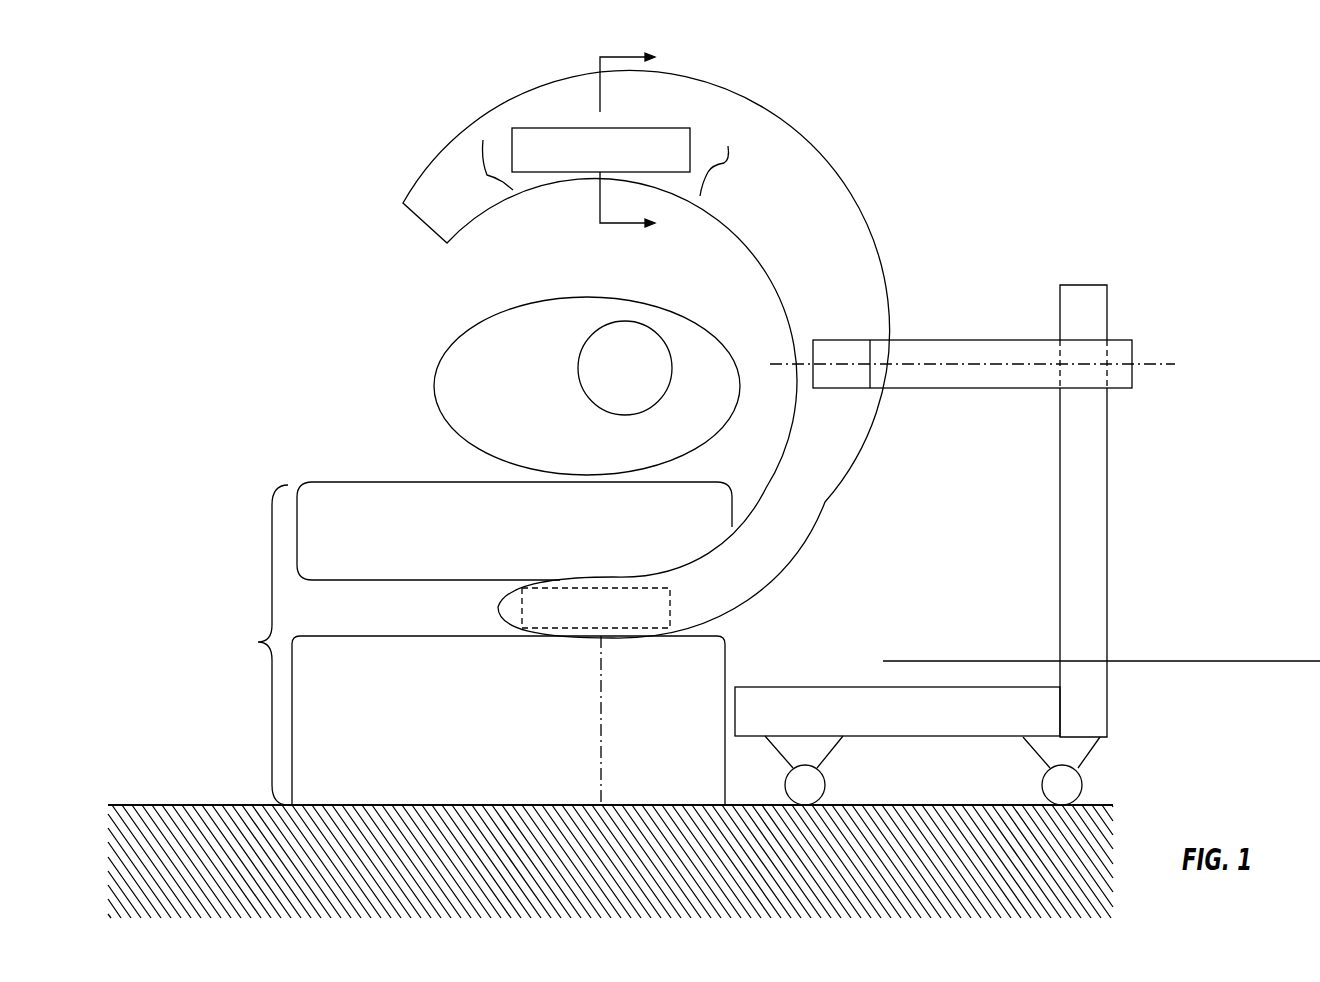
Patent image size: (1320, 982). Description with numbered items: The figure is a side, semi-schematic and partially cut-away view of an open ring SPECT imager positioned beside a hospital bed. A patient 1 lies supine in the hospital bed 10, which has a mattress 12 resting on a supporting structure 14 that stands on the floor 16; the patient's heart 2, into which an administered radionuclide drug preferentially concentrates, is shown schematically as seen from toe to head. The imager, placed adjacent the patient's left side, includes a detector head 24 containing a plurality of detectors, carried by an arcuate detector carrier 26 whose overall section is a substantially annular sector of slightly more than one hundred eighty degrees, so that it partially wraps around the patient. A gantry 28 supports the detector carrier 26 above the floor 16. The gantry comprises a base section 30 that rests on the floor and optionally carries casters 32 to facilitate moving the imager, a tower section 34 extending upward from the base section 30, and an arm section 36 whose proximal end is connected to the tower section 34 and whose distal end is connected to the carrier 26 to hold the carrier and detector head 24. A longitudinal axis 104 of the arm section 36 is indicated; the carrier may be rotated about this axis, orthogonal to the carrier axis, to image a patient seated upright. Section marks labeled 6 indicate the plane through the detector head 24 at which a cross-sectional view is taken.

The patient 1 is at (503, 368).
The patient's heart 2 is at (630, 381).
The section line 6- 6 is at (636, 141).
The hospital bed 10 is at (256, 645).
The mattress 12 is at (353, 521).
The supporting structure 14 is at (353, 701).
The floor 16 is at (518, 896).
The detector head 24 is at (613, 164).
The arcuate detector carrier 26 is at (825, 479).
The gantry 28 is at (1014, 538).
The base section 30 is at (909, 726).
The casters 32 is at (812, 790).
The tower section 34 is at (1097, 701).
The arm section 36 is at (915, 348).
The longitudinal axis of the arm 104 is at (933, 365).